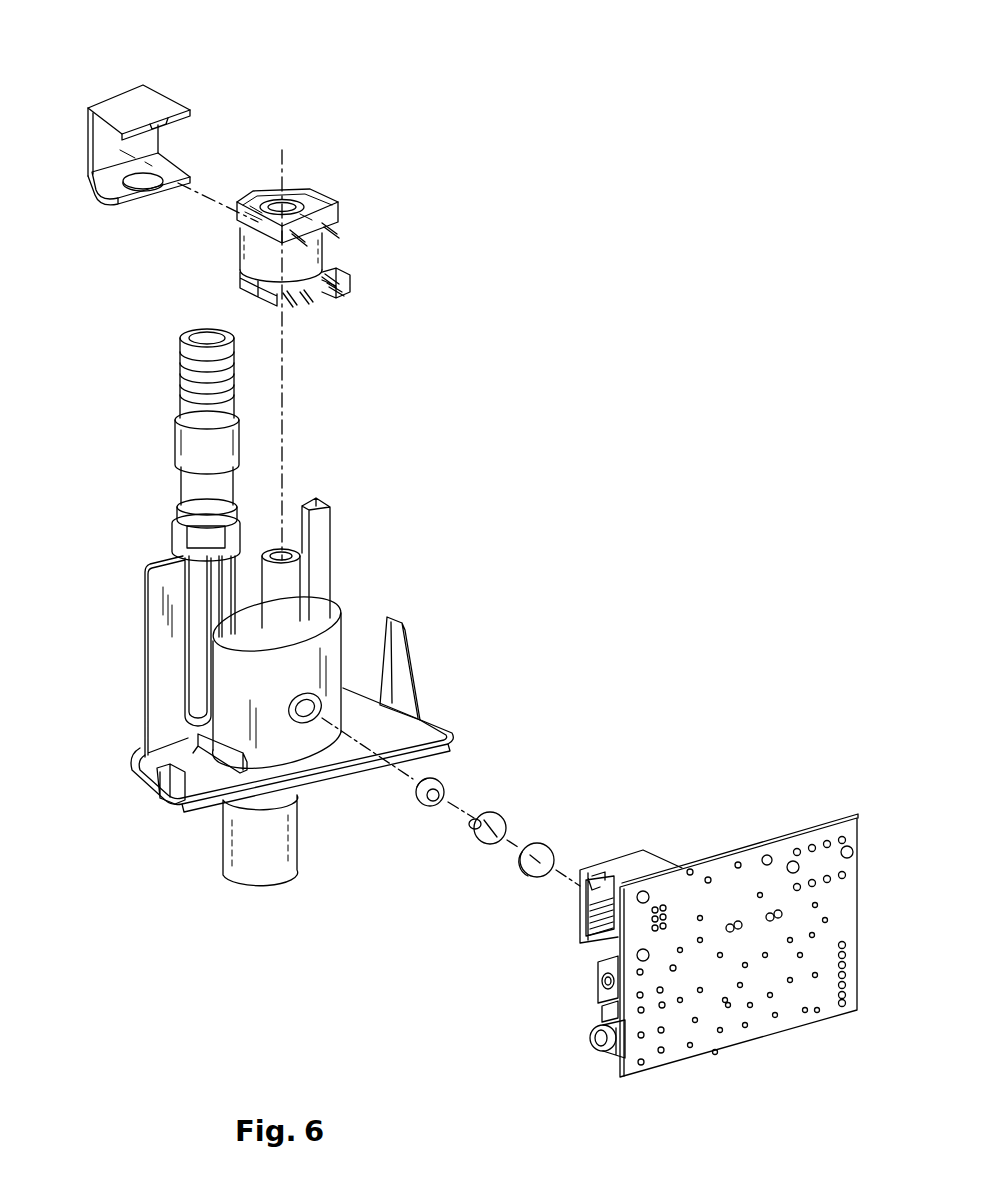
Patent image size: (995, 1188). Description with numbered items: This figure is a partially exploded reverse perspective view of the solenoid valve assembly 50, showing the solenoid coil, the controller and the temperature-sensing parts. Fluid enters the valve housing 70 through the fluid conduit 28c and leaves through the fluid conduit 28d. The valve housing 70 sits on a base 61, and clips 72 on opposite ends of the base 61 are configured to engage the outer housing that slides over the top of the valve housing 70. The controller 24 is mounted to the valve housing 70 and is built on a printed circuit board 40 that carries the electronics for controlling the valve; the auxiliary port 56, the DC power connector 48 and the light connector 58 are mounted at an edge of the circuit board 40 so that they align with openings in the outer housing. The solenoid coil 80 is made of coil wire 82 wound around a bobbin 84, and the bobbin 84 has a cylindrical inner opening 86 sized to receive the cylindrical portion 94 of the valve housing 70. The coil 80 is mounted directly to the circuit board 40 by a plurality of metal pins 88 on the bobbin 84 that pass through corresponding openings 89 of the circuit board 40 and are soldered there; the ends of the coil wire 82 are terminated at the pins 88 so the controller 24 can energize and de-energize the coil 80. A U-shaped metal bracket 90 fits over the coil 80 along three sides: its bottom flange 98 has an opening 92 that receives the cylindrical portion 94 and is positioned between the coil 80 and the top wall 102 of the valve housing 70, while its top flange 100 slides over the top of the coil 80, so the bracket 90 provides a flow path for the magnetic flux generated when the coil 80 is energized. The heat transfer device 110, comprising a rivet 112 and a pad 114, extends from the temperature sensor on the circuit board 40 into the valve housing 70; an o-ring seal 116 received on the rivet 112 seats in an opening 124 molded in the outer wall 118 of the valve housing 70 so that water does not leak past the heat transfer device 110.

The controller 24 is at (660, 941).
The fluid conduit 28c is at (216, 866).
The fluid conduit 28d is at (172, 437).
The printed circuit board 40 is at (702, 1053).
The DC power connector 48 is at (593, 992).
The solenoid valve assembly 50 is at (363, 651).
The auxiliary port 56 is at (573, 930).
The light connector 58 is at (588, 1055).
The base 61 is at (456, 738).
The valve housing 70 is at (312, 659).
The clips 72 is at (422, 676).
The solenoid coil 80 is at (314, 307).
The coil wire 82 is at (310, 257).
The bobbin 84 is at (282, 182).
The cylindrical inner opening 86 is at (266, 200).
The metal pins 88 is at (349, 290).
The openings 89 is at (772, 914).
The U-shaped metal bracket 90 is at (149, 156).
The opening 92 is at (148, 190).
The cylindrical portion 94 is at (300, 586).
The bottom flange 98 is at (102, 196).
The top flange 100 is at (150, 101).
The top wall 102 is at (248, 598).
The heat transfer device 110 is at (488, 810).
The rivet 112 is at (502, 812).
The pad 114 is at (556, 848).
The o-ring seal 116 is at (418, 808).
The outer wall 118 is at (245, 687).
The opening 124 is at (300, 725).